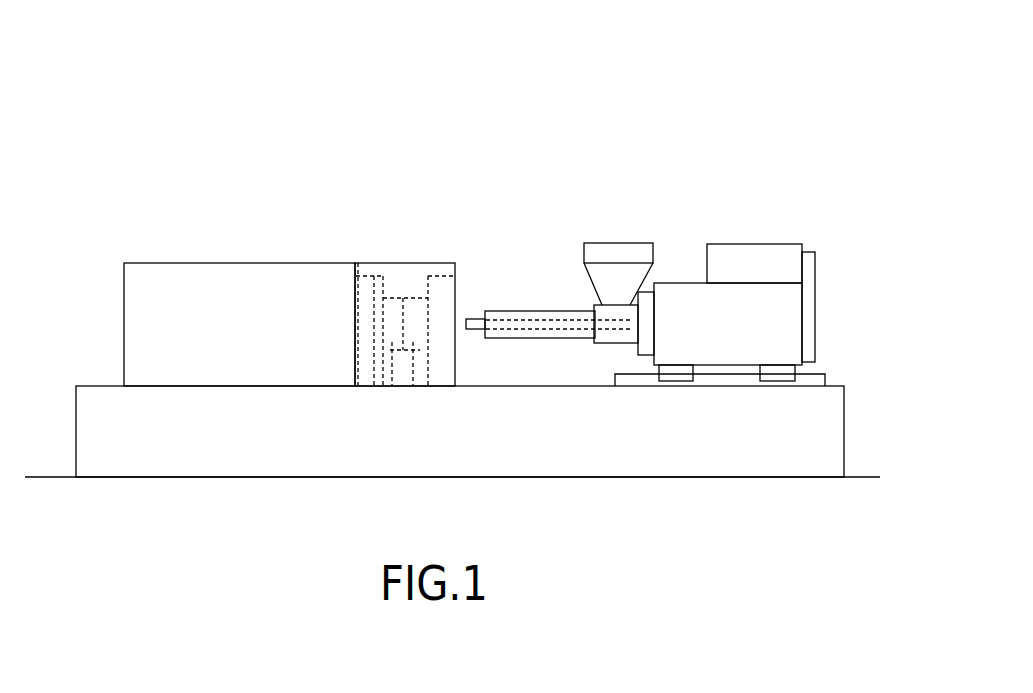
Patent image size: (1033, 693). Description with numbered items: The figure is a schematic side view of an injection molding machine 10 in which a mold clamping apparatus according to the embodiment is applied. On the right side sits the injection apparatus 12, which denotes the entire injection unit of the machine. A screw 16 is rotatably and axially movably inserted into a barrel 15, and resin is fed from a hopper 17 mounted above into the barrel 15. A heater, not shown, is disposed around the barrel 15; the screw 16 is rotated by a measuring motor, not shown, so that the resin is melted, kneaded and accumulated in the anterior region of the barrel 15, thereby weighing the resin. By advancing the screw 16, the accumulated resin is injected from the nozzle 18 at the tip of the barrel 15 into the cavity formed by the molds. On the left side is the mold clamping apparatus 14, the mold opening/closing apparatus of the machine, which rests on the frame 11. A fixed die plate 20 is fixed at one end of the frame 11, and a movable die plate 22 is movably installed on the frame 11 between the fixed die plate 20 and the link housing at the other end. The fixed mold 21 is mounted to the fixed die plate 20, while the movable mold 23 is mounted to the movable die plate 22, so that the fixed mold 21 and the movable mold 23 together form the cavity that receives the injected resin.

The injection molding machine 10 is at (571, 121).
The frame 11 is at (95, 414).
The injection apparatus 12 is at (699, 228).
The mold clamping apparatus 14 is at (306, 249).
The barrel 15 is at (515, 311).
The screw 16 is at (561, 320).
The hopper 17 is at (615, 252).
The nozzle 18 is at (475, 329).
The fixed die plate 20 is at (440, 292).
The fixed mold 21 is at (413, 387).
The movable die plate 22 is at (382, 262).
The movable mold 23 is at (392, 387).